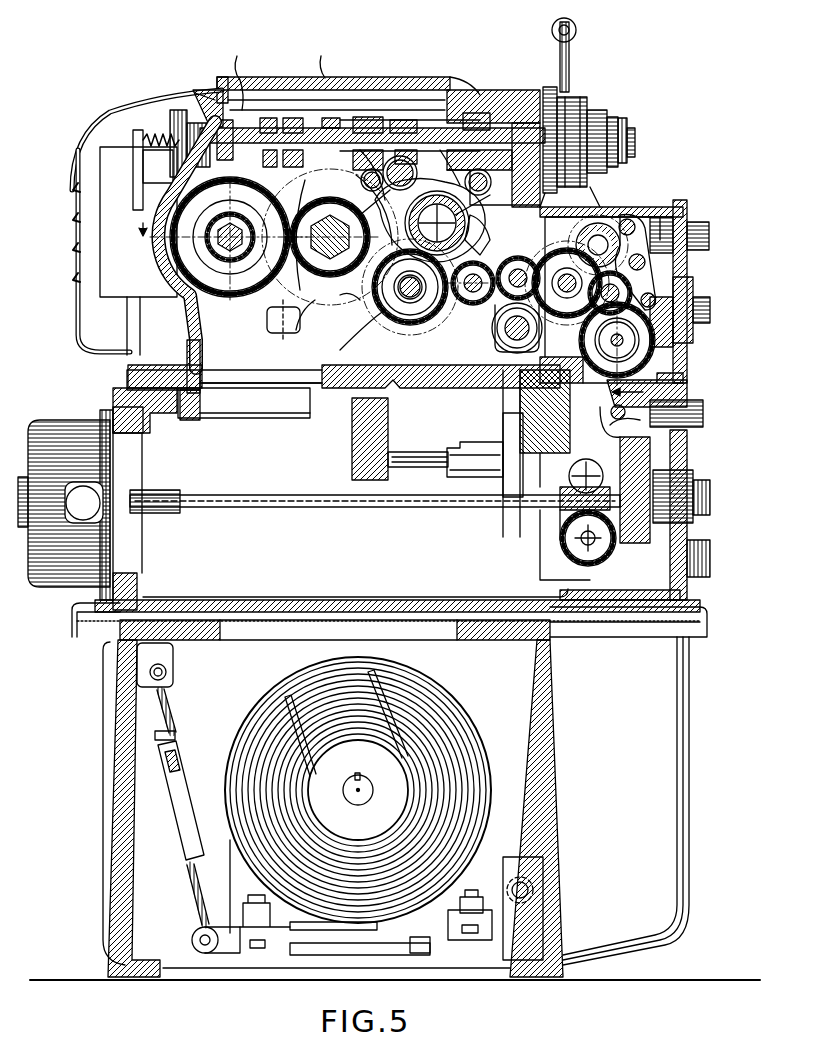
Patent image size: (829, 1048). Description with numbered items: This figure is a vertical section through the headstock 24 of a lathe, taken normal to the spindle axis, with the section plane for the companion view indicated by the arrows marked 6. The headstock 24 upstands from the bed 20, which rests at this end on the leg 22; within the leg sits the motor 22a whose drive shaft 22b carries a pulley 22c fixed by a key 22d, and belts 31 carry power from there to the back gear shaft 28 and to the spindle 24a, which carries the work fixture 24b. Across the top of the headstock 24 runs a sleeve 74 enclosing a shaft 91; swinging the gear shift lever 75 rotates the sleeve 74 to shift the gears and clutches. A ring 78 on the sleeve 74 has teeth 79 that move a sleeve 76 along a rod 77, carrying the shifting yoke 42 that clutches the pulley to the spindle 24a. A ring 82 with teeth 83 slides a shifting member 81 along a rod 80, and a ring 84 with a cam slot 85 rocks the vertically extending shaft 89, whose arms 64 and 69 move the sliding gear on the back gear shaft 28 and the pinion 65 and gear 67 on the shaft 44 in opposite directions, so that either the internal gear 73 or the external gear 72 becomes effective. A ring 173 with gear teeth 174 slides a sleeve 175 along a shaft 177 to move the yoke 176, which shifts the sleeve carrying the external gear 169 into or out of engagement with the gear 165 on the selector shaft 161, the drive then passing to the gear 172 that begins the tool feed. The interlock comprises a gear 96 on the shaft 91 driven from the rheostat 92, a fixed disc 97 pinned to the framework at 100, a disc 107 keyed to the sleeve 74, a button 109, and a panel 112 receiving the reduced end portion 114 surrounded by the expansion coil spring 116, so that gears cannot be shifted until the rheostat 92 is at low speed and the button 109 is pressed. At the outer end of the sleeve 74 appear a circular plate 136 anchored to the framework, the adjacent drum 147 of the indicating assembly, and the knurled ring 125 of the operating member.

The section line 6- 6 is at (142, 238).
The bed 20 is at (375, 527).
The leg 22 is at (103, 835).
The motor 22a is at (460, 706).
The drive shaft 22b is at (352, 797).
The pulley 22c is at (385, 815).
The key 22d is at (358, 772).
The headstock 24 is at (520, 100).
The spindle 24a is at (475, 262).
The work fixture 24b is at (455, 80).
The back gear shaft 28 is at (224, 230).
The belts 31 is at (290, 738).
The shifting yoke 42 is at (482, 262).
The shaft 44 is at (322, 256).
The shifting arm 64 is at (250, 180).
The pinion 65 is at (330, 296).
The gear 67 is at (346, 306).
The shifting member 69 is at (321, 57).
The external gear 72 is at (217, 296).
The internal gear 73 is at (235, 262).
The sleeve 74 is at (372, 128).
The gear shift lever 75 is at (577, 29).
The sleeve 76 is at (472, 217).
The rod 77 is at (445, 192).
The ring 78 is at (470, 113).
The gear teeth 79 is at (488, 181).
The rod 80 is at (336, 121).
The shifting member 81 is at (327, 225).
The ring 82 is at (360, 117).
The teeth 83 is at (368, 144).
The ring 84 is at (300, 118).
The cam slot 85 is at (270, 118).
The vertically extending shaft 89 is at (268, 318).
The shaft 91 is at (250, 140).
The rheostat 92 is at (118, 298).
The gear 96 is at (190, 96).
The disc 97 is at (205, 95).
The screw connection 100 is at (195, 98).
The disc 107 is at (237, 73).
The button 109 is at (636, 138).
The panel 112 is at (135, 140).
The reduced end portion 114 is at (128, 142).
The expansion coil spring 116 is at (150, 133).
The knurled ring 125 is at (623, 160).
The circular plate 136 is at (548, 88).
The drum 147 is at (578, 105).
The selector shaft 161 is at (410, 318).
The gear 165 is at (400, 305).
The external gear 169 is at (356, 334).
The gear 172 is at (460, 303).
The ring 173 is at (372, 168).
The gear teeth 174 is at (400, 158).
The sleeve 175 is at (412, 165).
The yoke 176 is at (370, 250).
The shaft 177 is at (403, 160).